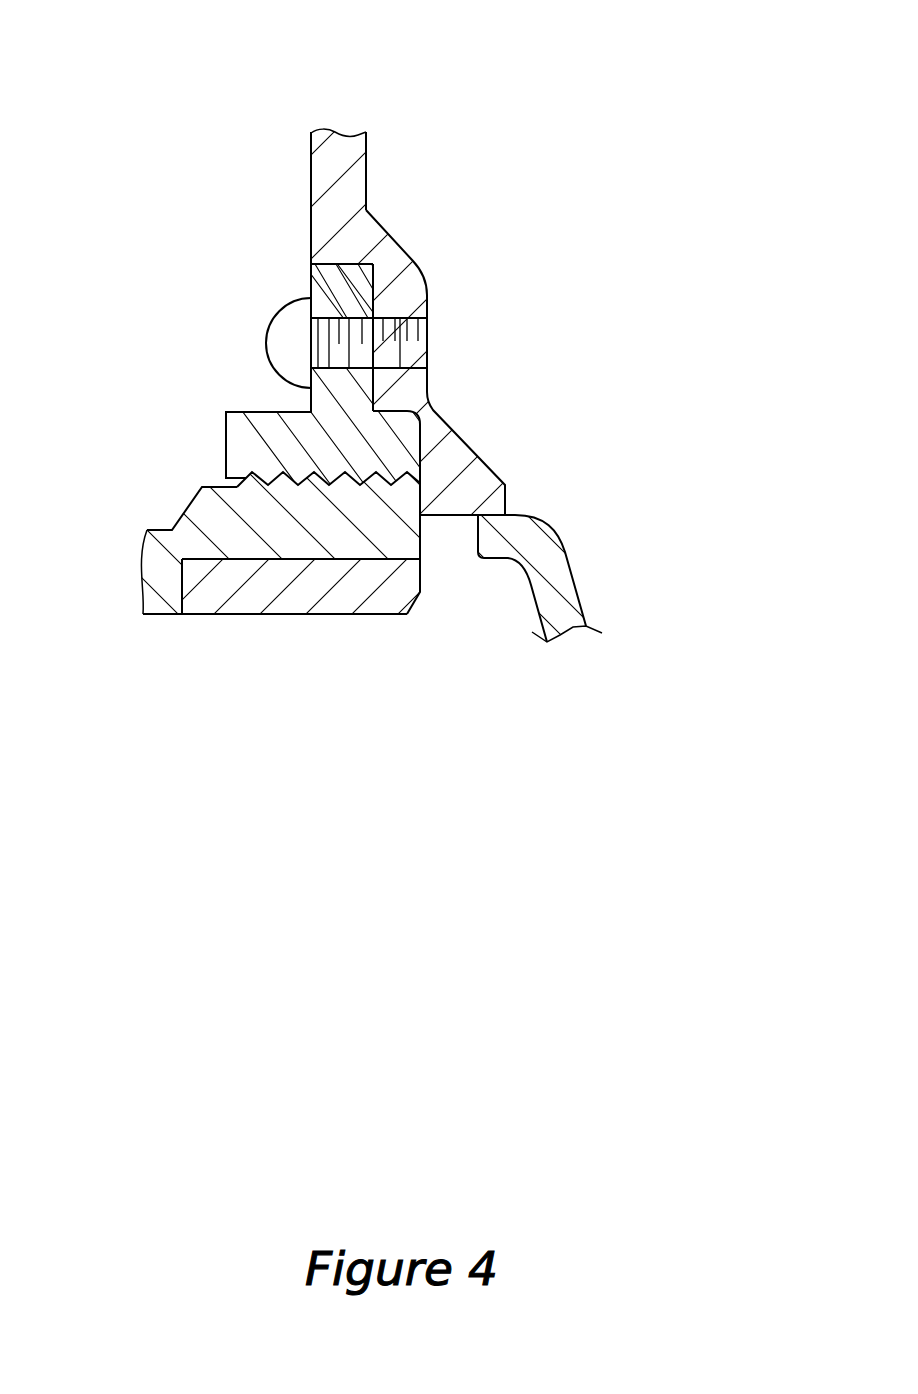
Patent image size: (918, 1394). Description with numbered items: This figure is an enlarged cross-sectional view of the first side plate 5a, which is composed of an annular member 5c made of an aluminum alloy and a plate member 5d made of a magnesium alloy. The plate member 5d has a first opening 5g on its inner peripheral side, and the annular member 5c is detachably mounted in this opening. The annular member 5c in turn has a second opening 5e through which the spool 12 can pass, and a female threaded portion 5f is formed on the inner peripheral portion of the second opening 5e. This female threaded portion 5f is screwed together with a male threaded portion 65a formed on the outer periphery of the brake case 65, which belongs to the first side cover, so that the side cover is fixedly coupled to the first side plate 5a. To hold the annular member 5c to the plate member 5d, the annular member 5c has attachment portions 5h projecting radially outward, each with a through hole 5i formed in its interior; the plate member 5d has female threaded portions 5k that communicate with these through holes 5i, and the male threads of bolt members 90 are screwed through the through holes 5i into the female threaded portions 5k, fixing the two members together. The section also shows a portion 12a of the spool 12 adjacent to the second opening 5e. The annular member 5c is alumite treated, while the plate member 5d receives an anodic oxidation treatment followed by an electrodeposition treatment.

The first side plate 5a is at (459, 358).
The plate member 5d is at (352, 165).
The attachment portions 5h is at (359, 302).
The through holes 5i is at (359, 362).
The female threaded portion 5k is at (420, 328).
The annular member 5c is at (382, 448).
The second opening 5e is at (393, 499).
The first opening 5g is at (407, 597).
The female threaded portion 5f is at (272, 496).
The male threaded portion 65a is at (300, 384).
The brake case 65 is at (168, 558).
The bolt members 90 is at (270, 333).
The housing wall portion 12a is at (543, 559).
The spool 12 is at (575, 580).